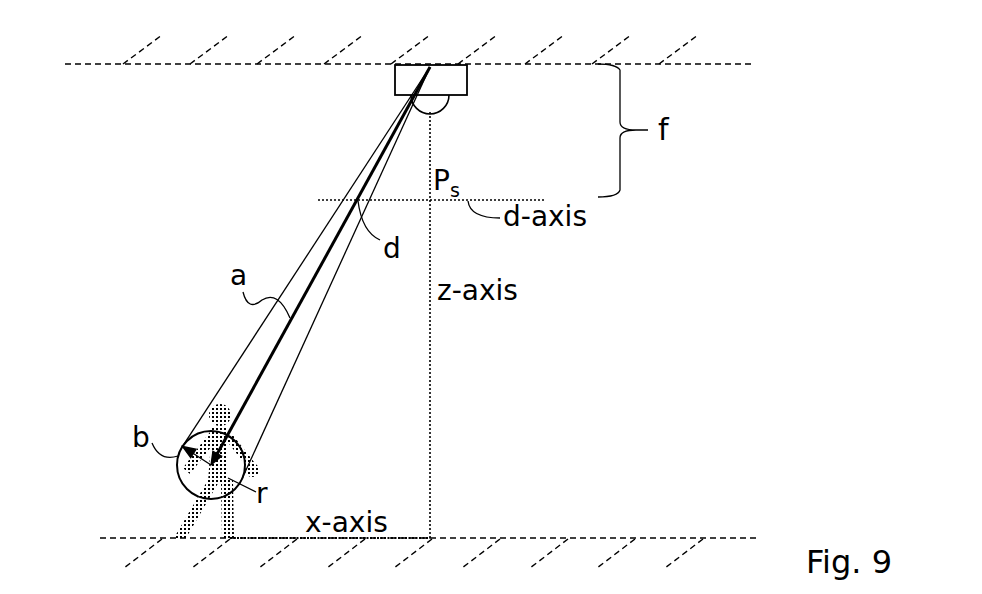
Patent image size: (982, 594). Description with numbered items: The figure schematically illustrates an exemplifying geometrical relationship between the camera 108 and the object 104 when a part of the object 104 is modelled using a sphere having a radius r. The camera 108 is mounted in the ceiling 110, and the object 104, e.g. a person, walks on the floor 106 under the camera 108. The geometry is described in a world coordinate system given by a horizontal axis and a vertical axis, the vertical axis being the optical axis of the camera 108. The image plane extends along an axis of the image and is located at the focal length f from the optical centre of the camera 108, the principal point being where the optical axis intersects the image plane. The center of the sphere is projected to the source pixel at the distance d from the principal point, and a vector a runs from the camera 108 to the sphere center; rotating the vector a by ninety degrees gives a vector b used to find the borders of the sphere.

The object 104 is at (178, 478).
The floor 106 is at (565, 540).
The camera 108 is at (467, 72).
The ceiling 110 is at (138, 65).